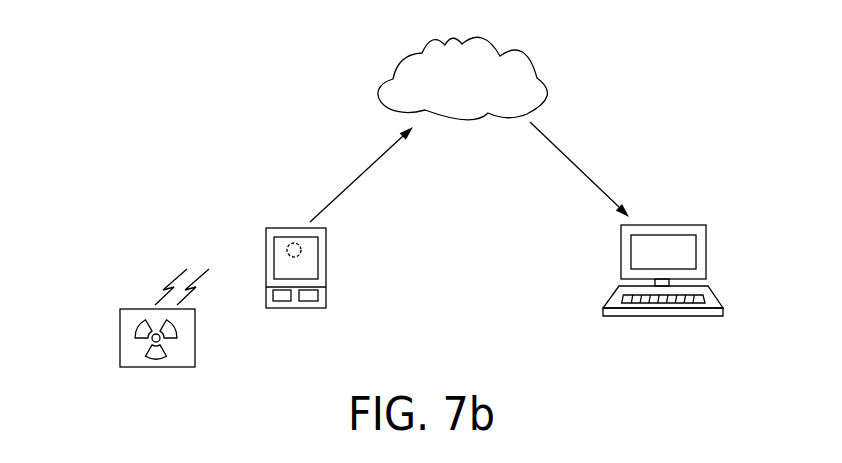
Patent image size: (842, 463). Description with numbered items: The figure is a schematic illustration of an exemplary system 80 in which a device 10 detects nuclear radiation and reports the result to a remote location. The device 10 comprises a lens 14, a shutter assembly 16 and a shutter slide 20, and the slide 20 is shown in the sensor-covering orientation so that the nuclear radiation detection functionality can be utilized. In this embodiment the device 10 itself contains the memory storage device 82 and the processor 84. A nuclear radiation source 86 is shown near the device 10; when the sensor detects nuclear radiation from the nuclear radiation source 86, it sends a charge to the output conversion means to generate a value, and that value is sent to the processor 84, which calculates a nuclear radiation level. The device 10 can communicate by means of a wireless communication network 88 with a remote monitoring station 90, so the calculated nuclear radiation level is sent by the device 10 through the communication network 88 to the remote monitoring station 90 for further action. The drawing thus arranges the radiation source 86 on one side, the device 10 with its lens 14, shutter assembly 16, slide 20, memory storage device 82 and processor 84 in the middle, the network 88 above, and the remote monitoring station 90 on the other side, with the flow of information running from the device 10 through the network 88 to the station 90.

The system 80 is at (323, 54).
The wireless communication network 88 is at (477, 93).
The device 10 is at (287, 228).
The shutter assembly 16 is at (320, 241).
The lens 14 is at (302, 250).
The shutter slide 20 is at (292, 268).
The memory storage device 82 is at (282, 302).
The processor 84 is at (308, 302).
The nuclear radiation source 86 is at (120, 347).
The remote monitoring station 90 is at (683, 225).